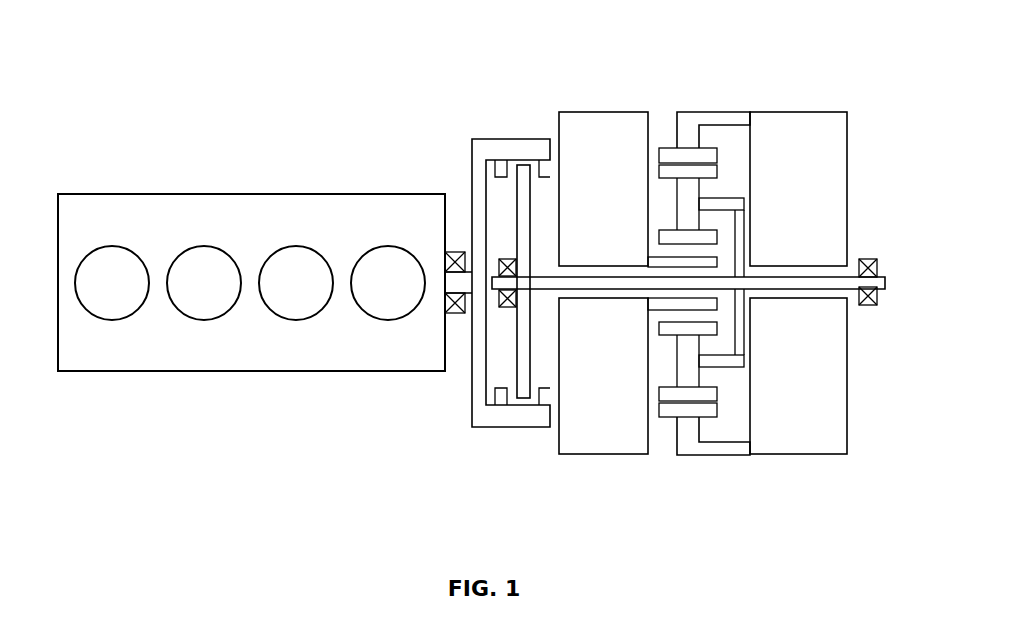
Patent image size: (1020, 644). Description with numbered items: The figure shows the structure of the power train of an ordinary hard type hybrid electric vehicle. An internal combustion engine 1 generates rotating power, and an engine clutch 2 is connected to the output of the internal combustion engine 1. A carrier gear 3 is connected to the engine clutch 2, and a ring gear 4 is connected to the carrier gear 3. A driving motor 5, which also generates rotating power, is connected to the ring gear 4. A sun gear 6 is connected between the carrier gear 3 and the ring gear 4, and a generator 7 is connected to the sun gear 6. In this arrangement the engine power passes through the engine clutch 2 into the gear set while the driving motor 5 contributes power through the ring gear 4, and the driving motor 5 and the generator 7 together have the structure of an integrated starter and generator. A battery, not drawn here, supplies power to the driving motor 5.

The internal combustion engine 1 is at (238, 194).
The engine clutch 2 is at (457, 178).
The carrier gear 3 is at (547, 287).
The ring gear 4 is at (708, 140).
The driving motor 5 is at (848, 360).
The sun gear 6 is at (735, 260).
The generator 7 is at (601, 455).